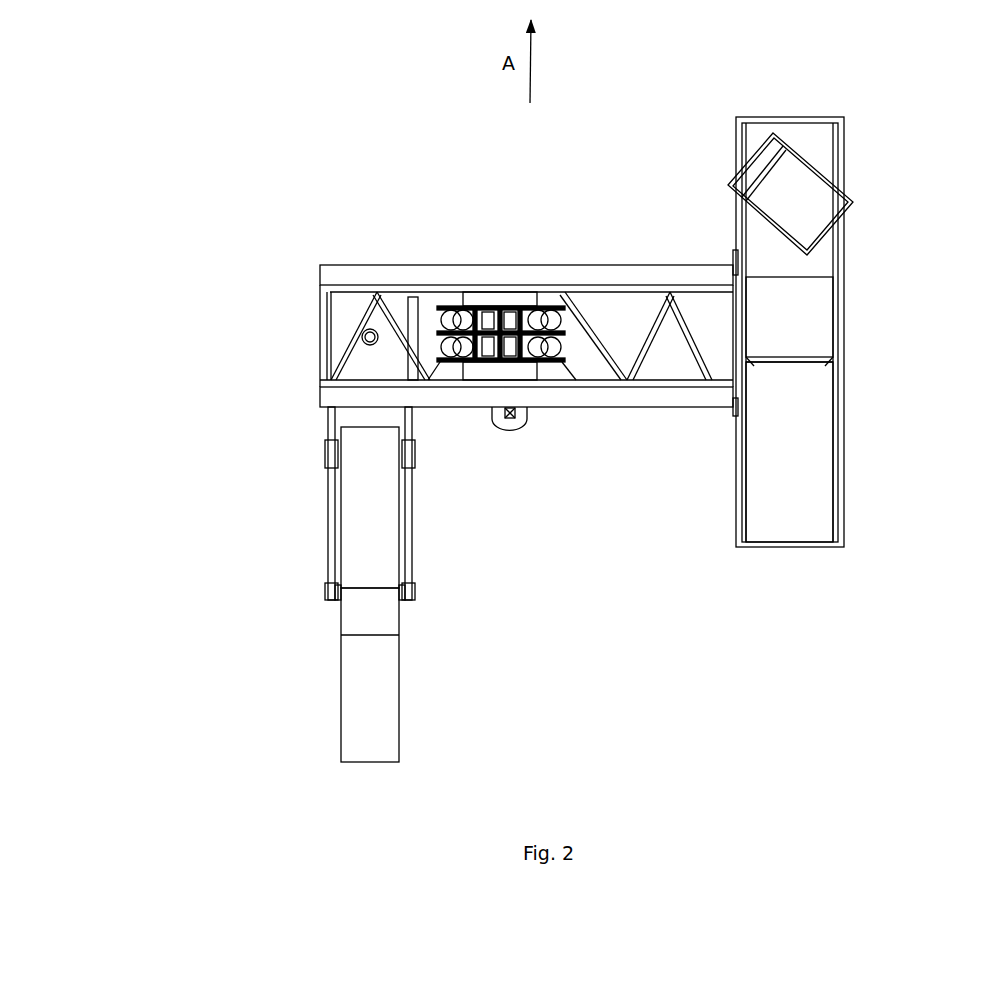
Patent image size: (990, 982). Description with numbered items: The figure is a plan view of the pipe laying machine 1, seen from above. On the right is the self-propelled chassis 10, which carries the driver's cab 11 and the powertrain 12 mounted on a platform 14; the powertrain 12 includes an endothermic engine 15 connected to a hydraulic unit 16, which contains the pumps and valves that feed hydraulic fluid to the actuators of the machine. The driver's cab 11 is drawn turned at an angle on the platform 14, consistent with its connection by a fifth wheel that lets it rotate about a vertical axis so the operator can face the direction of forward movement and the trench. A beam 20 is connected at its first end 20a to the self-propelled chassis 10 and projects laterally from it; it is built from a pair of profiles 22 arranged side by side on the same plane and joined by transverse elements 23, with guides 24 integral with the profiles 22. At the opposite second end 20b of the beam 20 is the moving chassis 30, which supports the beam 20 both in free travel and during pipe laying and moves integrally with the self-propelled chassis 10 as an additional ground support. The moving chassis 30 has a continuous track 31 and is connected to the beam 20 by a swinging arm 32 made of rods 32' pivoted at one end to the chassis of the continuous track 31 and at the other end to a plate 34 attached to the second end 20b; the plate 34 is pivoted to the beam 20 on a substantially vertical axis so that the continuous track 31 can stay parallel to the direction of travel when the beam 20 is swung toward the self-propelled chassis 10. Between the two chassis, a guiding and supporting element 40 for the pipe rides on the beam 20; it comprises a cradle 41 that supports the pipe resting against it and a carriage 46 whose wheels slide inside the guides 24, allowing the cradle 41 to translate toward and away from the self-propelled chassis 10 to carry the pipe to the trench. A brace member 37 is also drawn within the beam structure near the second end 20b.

The pipe laying machine 1 is at (153, 147).
The self-propelled chassis 10 is at (718, 108).
The driver's cab 11 is at (822, 190).
The powertrain 12 is at (880, 375).
The platform 14 is at (822, 128).
The endothermic engine 15 is at (822, 467).
The hydraulic unit 16 is at (822, 318).
The beam 20 is at (588, 242).
The first end of the beam 20a is at (718, 422).
The second end of the beam 20b is at (325, 243).
The profiles 22 is at (420, 275).
The transverse elements 23 is at (648, 300).
The guides 24 is at (355, 297).
The moving chassis 30 is at (305, 655).
The continuous track 31 is at (392, 703).
The swinging arm 32 is at (423, 503).
The rods 32' is at (370, 520).
The plate 34 is at (378, 318).
The brace member 37 is at (318, 345).
The guiding and supporting element 40 is at (548, 372).
The cradle 41 is at (497, 300).
The carriage 46 is at (484, 372).